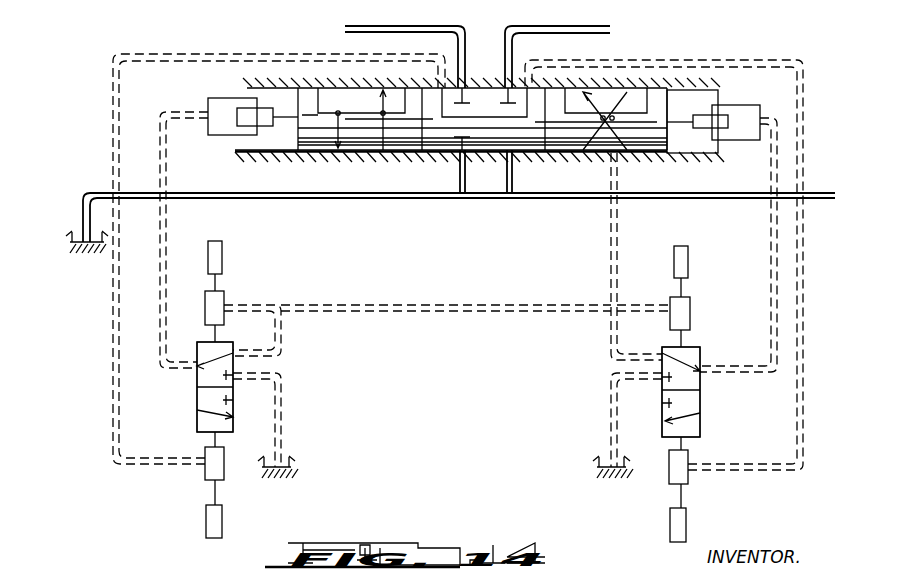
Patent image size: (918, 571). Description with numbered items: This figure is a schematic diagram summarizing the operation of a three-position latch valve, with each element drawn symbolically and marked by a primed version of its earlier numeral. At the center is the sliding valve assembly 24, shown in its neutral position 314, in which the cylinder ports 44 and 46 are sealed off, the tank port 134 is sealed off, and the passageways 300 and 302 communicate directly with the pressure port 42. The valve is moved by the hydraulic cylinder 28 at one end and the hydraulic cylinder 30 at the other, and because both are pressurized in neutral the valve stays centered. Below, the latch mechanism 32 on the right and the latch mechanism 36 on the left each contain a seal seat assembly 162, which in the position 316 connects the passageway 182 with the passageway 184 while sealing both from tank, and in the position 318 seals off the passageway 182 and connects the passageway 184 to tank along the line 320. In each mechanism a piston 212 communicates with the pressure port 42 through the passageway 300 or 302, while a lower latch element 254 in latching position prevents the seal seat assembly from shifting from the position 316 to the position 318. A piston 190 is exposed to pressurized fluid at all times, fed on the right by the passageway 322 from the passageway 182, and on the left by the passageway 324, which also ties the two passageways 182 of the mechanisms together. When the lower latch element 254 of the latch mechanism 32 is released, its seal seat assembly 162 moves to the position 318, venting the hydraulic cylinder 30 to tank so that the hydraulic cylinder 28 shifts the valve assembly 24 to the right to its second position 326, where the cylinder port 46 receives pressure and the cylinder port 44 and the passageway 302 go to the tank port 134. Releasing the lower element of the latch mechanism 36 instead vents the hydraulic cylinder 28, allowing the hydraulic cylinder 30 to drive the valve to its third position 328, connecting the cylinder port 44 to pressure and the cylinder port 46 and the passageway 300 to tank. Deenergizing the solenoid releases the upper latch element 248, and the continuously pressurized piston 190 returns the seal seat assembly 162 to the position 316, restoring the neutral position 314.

The sliding valve assembly 24 is at (375, 152).
The second position 326 is at (382, 52).
The third position 328 is at (652, 159).
The neutral position 314 is at (445, 143).
The cylinder port 44 is at (480, 22).
The cylinder port 46 is at (496, 44).
The tank port 134 is at (378, 200).
The pressure port 42 is at (545, 203).
The hydraulic cylinder 28 is at (223, 133).
The hydraulic cylinder 30 is at (750, 105).
The passageway 302 is at (186, 57).
The passageway 300 is at (690, 48).
The passageway 184 is at (163, 247).
The passageway 182 is at (300, 335).
The passageway 324 is at (382, 285).
The passageway 322 is at (633, 300).
The tank line 320 is at (283, 417).
The latch mechanism 36 is at (321, 380).
The latch mechanism 32 is at (581, 387).
The upper latch element 248 is at (220, 255).
The piston 190 is at (218, 300).
The seal seat assembly 162 is at (191, 405).
The piston 212 is at (210, 477).
The lower latch element 254 is at (212, 522).
The seal seat position 316 is at (197, 382).
The seal seat position 318 is at (205, 422).